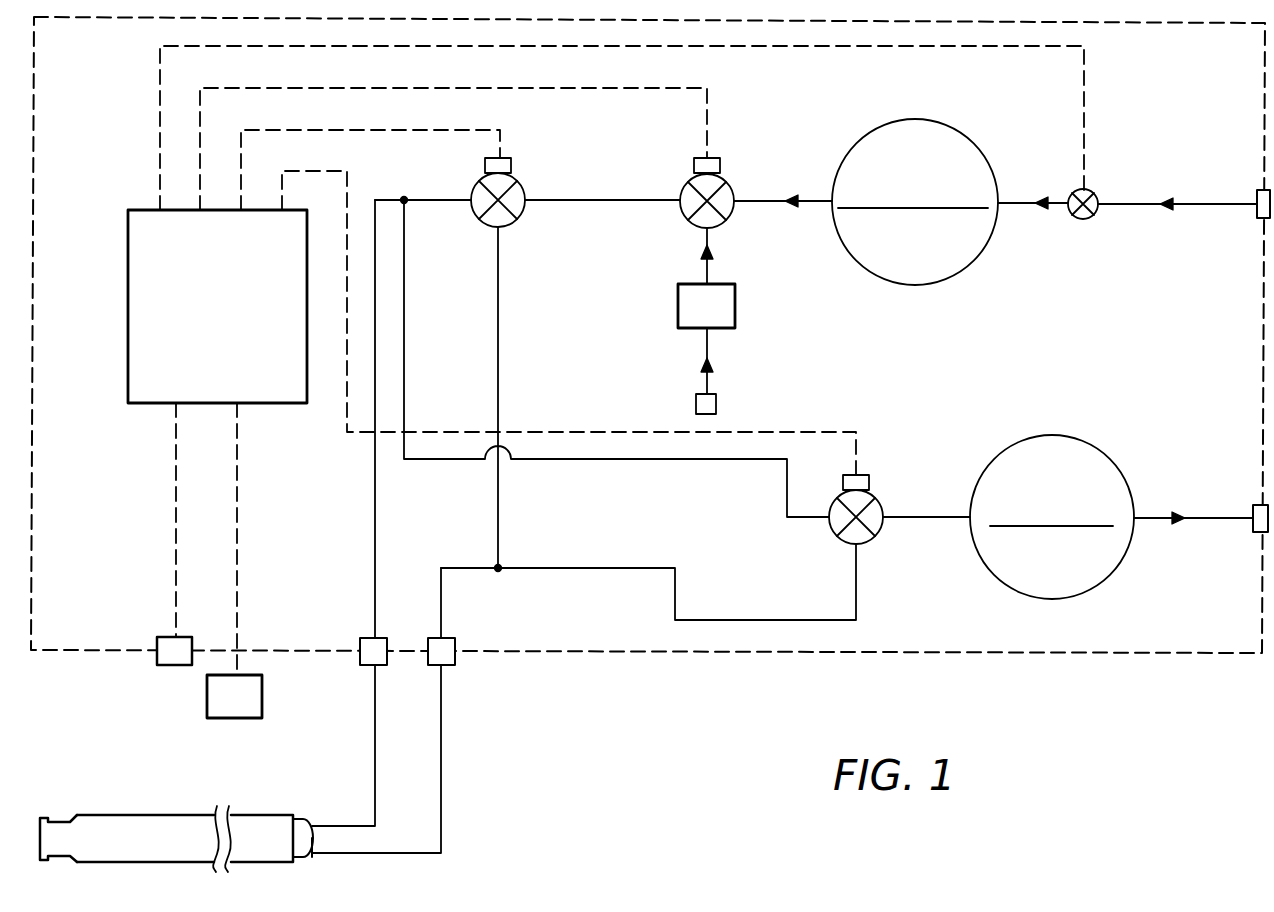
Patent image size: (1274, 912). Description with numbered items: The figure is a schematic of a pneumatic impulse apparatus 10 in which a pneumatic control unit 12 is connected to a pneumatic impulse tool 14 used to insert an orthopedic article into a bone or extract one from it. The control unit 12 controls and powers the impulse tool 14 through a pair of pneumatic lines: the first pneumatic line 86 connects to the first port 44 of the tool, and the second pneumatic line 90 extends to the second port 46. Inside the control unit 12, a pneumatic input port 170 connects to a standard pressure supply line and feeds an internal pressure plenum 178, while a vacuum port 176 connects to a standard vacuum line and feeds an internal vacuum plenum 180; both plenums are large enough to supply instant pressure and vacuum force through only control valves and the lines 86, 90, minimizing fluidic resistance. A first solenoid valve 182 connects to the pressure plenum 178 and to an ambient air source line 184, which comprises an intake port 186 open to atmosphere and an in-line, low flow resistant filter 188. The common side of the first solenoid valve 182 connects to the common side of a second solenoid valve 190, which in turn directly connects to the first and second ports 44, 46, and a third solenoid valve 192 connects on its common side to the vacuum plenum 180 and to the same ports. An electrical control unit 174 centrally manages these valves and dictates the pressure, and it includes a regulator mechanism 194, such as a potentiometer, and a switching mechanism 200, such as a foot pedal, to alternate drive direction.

The pneumatic impulse apparatus 10 is at (583, 768).
The pneumatic control unit 12 is at (1062, 640).
The pneumatic impulse tool 14 is at (195, 830).
The first port 44 is at (313, 857).
The second port 46 is at (313, 826).
The first pneumatic line 86 is at (441, 712).
The second pneumatic line 90 is at (372, 700).
The pneumatic input port 170 is at (1257, 192).
The electrical control unit 174 is at (258, 395).
The vacuum port 176 is at (1255, 505).
The internal pressure plenum 178 is at (957, 253).
The internal vacuum plenum 180 is at (1103, 550).
The first solenoid valve 182 is at (683, 215).
The ambient air source line 184 is at (680, 321).
The intake port 186 is at (714, 404).
The filter 188 is at (712, 322).
The second solenoid valve 190 is at (500, 222).
The third solenoid valve 192 is at (840, 522).
The regulator mechanism 194 is at (162, 650).
The switching mechanism 200 is at (248, 690).